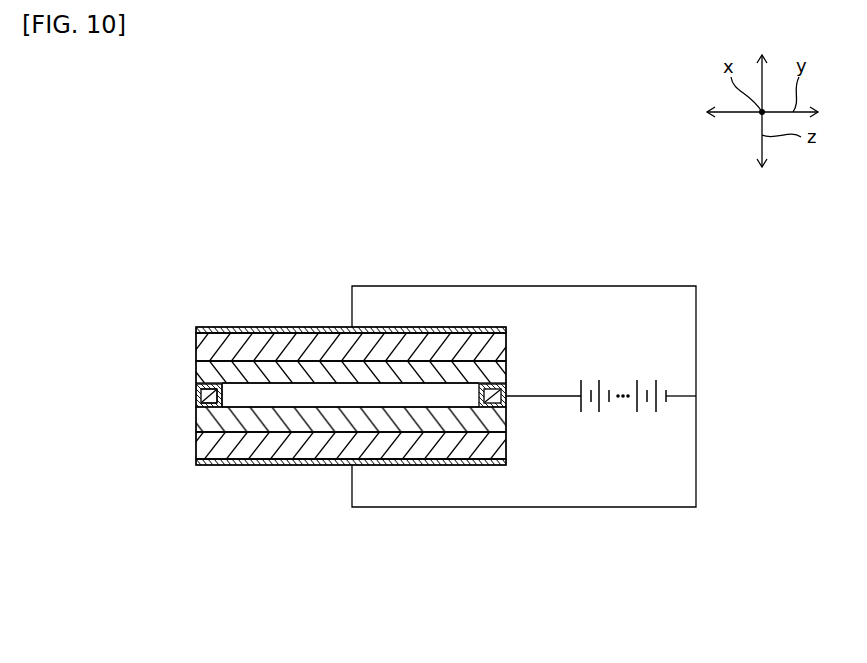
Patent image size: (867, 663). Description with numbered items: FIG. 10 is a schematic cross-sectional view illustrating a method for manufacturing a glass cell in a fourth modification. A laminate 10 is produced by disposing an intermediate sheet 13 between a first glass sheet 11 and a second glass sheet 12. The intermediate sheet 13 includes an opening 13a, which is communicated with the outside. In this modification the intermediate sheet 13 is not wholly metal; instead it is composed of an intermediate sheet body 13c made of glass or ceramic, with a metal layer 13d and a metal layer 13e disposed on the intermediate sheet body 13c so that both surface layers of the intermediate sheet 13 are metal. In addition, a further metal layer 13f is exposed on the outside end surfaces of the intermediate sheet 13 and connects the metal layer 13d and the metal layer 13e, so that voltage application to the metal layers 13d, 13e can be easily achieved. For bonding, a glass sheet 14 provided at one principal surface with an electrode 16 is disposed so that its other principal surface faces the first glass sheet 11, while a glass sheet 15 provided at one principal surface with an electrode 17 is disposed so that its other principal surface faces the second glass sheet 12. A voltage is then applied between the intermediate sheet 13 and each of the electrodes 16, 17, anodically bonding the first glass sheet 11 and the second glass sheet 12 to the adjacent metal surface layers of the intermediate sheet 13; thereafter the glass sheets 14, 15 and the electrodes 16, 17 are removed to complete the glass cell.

The laminate 10 is at (98, 337).
The first glass sheet 11 is at (196, 370).
The second glass sheet 12 is at (196, 420).
The intermediate sheet 13 is at (192, 395).
The opening 13a is at (470, 397).
The intermediate sheet body 13c is at (222, 397).
The metal layer 13d is at (208, 386).
The metal layer 13e is at (209, 406).
The metal layer 13f is at (218, 392).
The glass sheet 14 is at (196, 345).
The glass sheet 15 is at (196, 445).
The electrode 16 is at (332, 327).
The electrode 17 is at (307, 465).